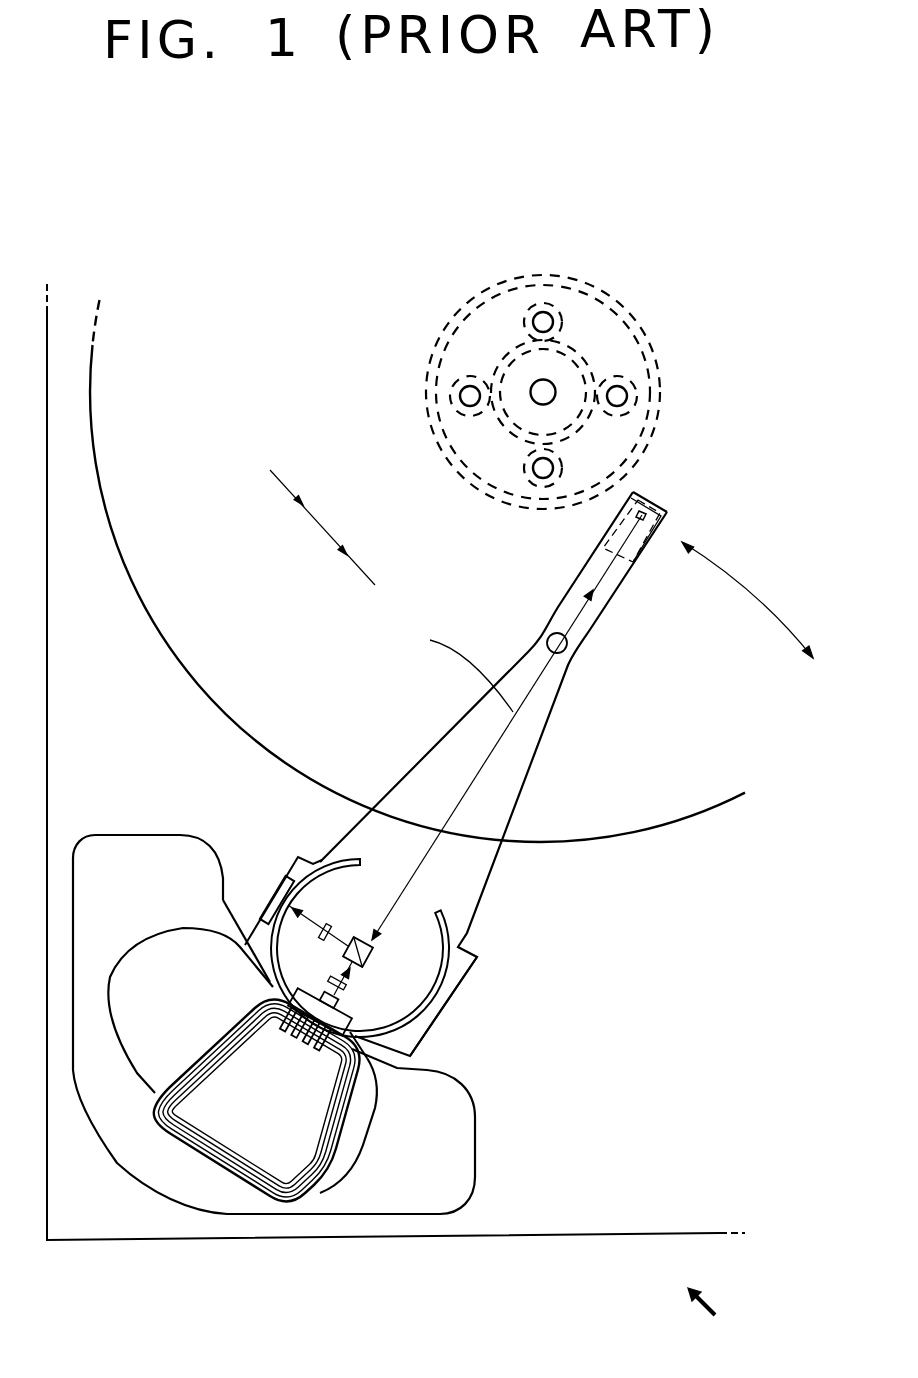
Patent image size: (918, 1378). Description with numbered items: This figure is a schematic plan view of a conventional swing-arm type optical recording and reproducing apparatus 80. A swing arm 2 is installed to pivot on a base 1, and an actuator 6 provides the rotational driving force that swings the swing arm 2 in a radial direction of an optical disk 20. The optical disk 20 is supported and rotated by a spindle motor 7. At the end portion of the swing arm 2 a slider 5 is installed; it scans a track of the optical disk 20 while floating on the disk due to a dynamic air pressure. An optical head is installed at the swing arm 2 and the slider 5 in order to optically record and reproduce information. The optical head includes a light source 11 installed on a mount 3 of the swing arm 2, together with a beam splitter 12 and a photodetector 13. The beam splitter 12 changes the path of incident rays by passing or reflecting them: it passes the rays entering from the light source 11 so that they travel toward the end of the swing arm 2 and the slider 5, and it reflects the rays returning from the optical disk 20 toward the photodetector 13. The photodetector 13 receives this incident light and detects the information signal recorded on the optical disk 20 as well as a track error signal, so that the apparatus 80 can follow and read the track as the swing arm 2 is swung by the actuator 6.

The base 1 is at (133, 1236).
The swing arm 2 is at (493, 850).
The mount 3 is at (338, 888).
The slider 5 is at (667, 512).
The actuator 6 is at (470, 1148).
The spindle motor 7 is at (428, 418).
The light source 11 is at (340, 1027).
The beam splitter 12 is at (372, 953).
The photodetector 13 is at (268, 892).
The optical disk 20 is at (650, 830).
The swing-arm type optical recording and reproducing apparatus 80 is at (727, 1309).